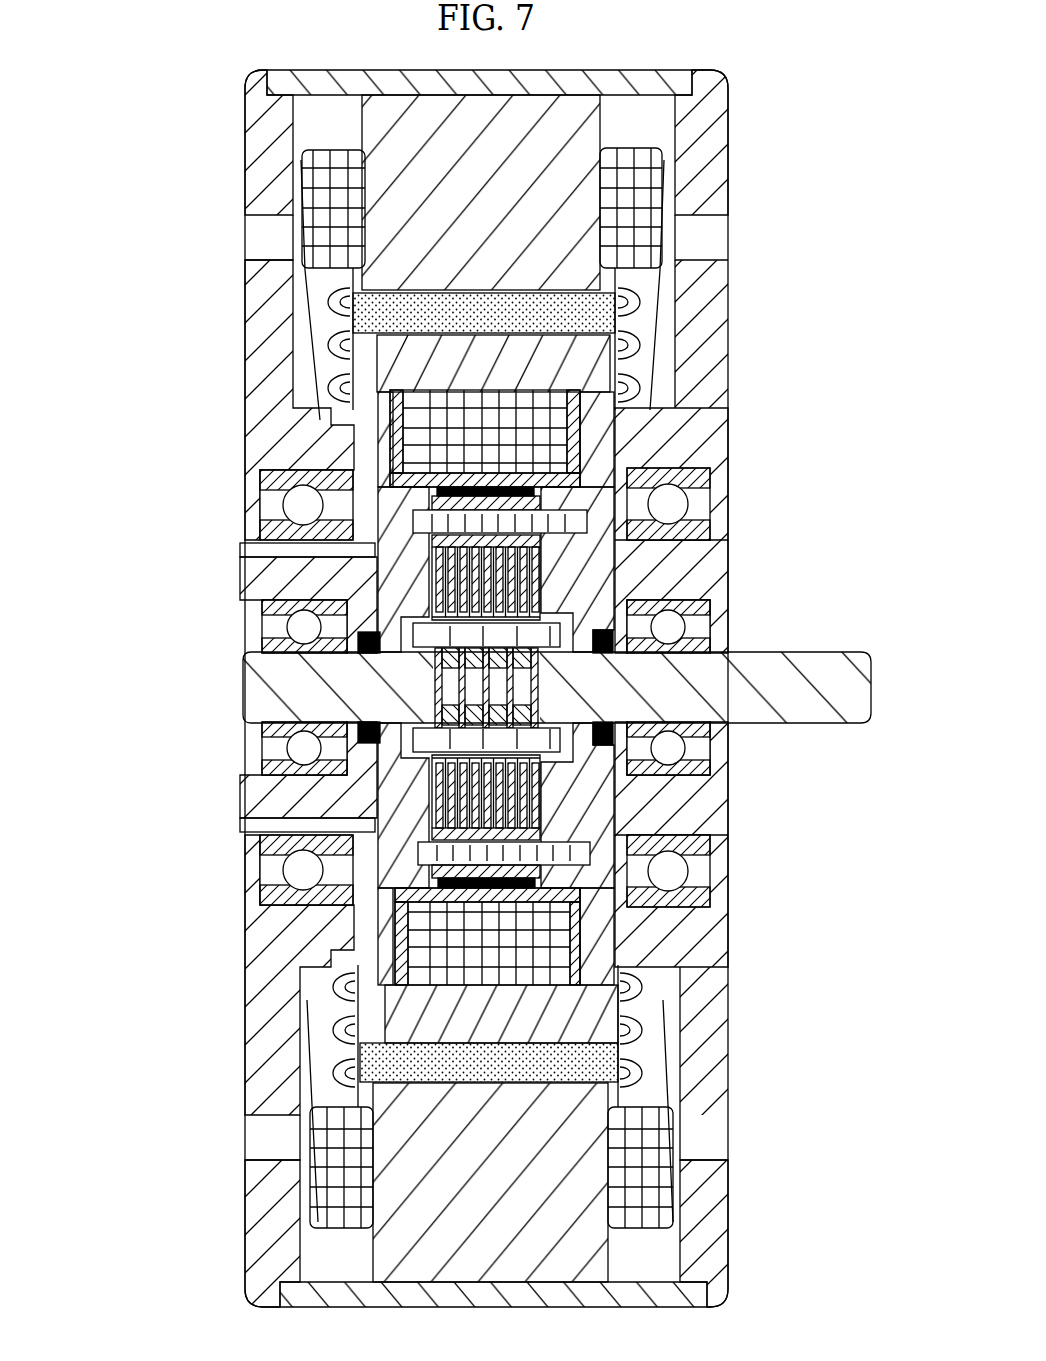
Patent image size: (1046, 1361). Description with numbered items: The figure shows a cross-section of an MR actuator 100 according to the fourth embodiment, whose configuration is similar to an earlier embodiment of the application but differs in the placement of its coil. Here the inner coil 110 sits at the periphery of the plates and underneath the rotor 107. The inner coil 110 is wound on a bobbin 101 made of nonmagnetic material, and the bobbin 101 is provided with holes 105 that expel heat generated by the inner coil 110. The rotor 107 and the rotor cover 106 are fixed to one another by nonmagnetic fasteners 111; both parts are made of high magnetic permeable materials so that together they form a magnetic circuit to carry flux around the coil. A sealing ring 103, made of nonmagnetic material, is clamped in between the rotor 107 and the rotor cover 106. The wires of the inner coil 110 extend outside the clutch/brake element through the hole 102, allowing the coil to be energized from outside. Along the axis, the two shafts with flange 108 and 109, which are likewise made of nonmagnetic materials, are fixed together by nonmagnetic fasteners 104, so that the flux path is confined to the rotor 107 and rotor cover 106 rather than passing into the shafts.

The MR actuator 100 is at (218, 150).
The bobbin 101 is at (397, 433).
The hole 102 is at (330, 550).
The sealing ring 103 is at (490, 492).
The nonmagnetic fasteners 104 is at (512, 742).
The holes 105 is at (596, 436).
The rotor cover 106 is at (375, 590).
The rotor 107 is at (650, 572).
The shaft with flange 108 is at (347, 685).
The shaft with flange 109 is at (678, 698).
The inner coil 110 is at (437, 422).
The nonmagnetic fasteners 111 is at (460, 855).